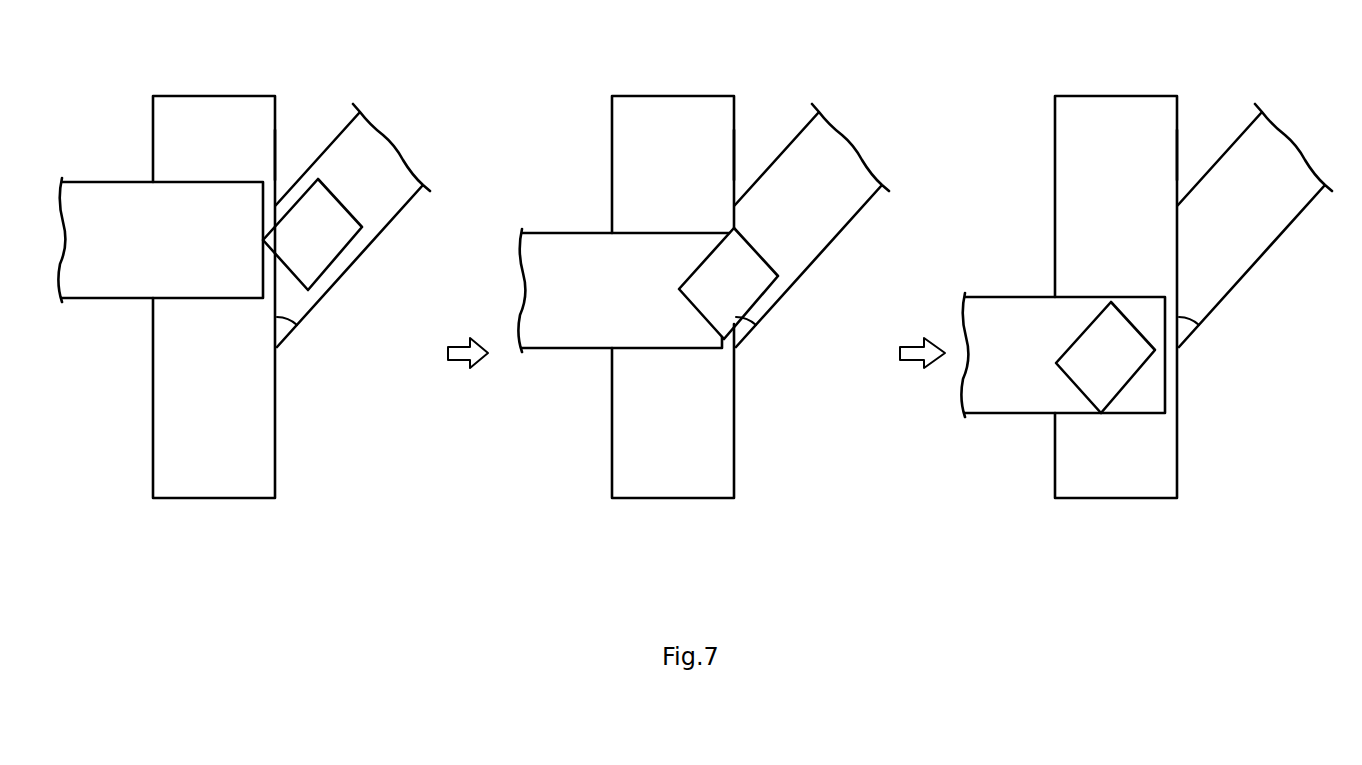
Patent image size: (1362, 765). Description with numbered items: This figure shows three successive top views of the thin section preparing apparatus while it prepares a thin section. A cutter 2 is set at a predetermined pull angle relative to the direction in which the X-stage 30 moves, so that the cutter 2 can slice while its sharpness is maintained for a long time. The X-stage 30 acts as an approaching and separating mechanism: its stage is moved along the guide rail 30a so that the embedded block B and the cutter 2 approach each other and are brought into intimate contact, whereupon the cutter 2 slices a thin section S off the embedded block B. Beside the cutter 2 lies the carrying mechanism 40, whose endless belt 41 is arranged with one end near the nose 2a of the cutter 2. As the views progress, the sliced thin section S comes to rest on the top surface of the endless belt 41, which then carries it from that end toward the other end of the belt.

The cutter 2 is at (212, 112).
The nose of the cutter 2a is at (276, 119).
The carrying mechanism 40 is at (609, 262).
The endless belt 41 is at (90, 193).
The X-stage 30 is at (812, 225).
The guide rail 30a is at (399, 210).
The embedded block B is at (751, 308).
The thin section S is at (327, 263).